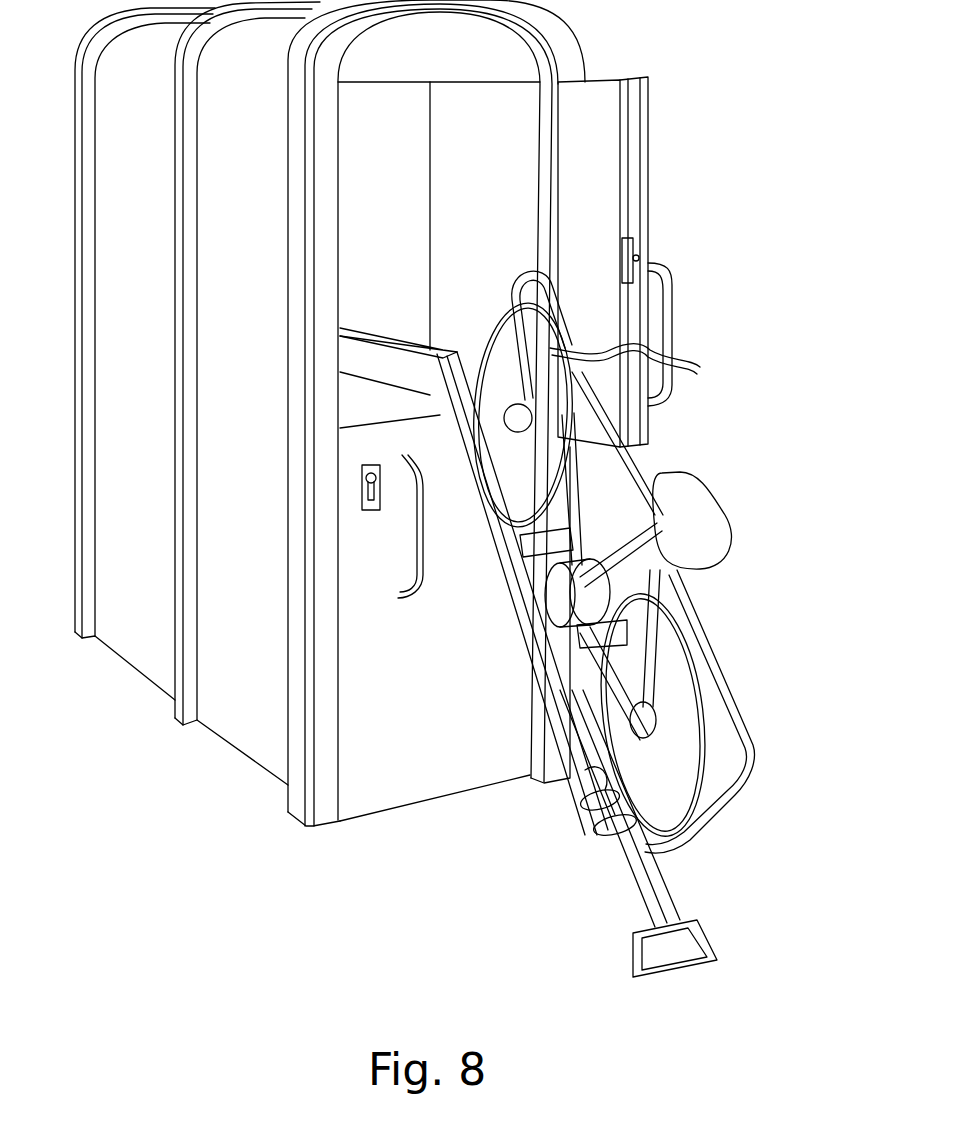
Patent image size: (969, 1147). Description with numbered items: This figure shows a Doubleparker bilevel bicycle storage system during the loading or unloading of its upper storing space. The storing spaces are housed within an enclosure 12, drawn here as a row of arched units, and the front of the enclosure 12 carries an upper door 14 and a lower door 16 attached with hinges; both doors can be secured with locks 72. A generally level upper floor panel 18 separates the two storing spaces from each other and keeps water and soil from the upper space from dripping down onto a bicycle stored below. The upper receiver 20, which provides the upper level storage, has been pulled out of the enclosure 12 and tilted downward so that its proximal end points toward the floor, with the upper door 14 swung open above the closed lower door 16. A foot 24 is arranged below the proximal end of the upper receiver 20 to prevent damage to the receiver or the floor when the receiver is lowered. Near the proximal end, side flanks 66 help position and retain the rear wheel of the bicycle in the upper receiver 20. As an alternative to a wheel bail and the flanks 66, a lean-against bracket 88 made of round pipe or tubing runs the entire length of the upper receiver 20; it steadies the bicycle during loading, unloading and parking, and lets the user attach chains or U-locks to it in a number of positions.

The enclosure 12 is at (228, 723).
The upper door 14 is at (648, 160).
The lower door 16 is at (372, 788).
The upper floor panel 18 is at (370, 395).
The upper receiver 20 is at (673, 887).
The foot 24 is at (713, 943).
The side flanks 66 is at (583, 828).
The lock 72 is at (640, 260).
The lean-against bracket 88 is at (640, 468).